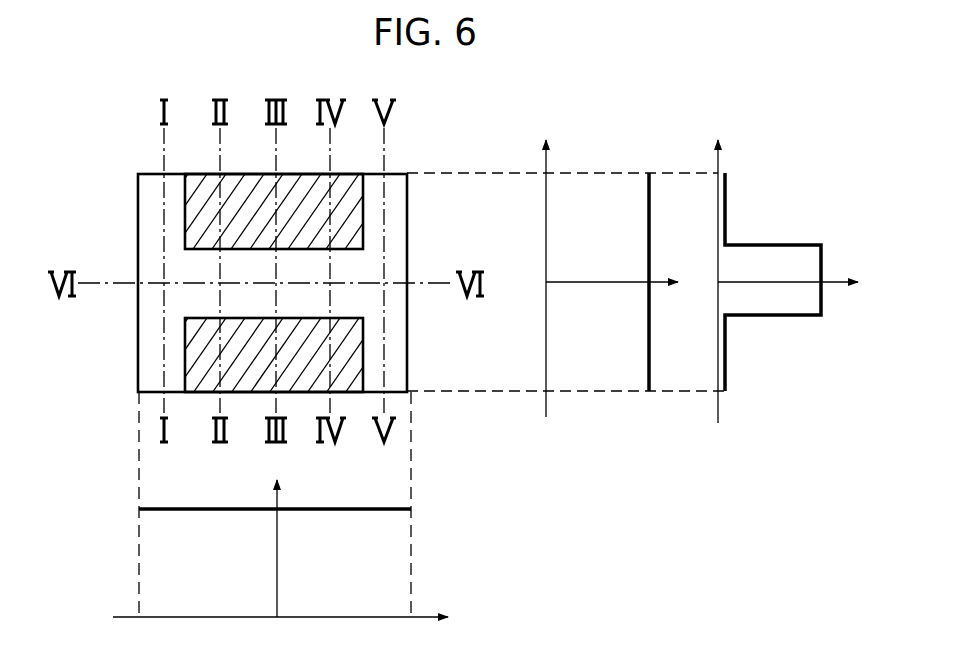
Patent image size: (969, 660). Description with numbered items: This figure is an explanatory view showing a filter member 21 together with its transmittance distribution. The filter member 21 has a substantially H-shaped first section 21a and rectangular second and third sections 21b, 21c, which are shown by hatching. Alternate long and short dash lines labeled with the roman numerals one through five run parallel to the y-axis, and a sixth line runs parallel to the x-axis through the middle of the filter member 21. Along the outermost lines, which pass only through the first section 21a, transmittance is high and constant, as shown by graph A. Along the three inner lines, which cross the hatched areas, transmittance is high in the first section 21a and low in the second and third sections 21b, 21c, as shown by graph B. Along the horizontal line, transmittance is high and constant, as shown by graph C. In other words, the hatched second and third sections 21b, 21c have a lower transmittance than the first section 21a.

The filter member 21 is at (136, 199).
The first section 21a is at (157, 243).
The second section 21b is at (348, 190).
The third section 21c is at (203, 378).
The graph A is at (573, 155).
The graph B is at (771, 173).
The graph C is at (126, 558).